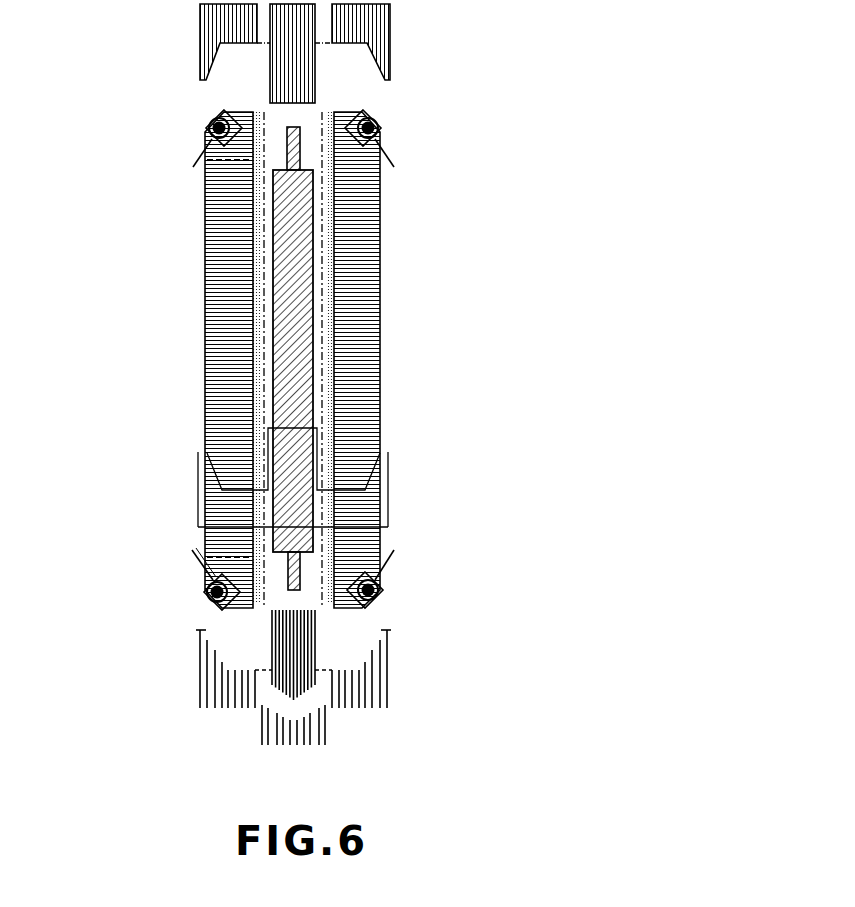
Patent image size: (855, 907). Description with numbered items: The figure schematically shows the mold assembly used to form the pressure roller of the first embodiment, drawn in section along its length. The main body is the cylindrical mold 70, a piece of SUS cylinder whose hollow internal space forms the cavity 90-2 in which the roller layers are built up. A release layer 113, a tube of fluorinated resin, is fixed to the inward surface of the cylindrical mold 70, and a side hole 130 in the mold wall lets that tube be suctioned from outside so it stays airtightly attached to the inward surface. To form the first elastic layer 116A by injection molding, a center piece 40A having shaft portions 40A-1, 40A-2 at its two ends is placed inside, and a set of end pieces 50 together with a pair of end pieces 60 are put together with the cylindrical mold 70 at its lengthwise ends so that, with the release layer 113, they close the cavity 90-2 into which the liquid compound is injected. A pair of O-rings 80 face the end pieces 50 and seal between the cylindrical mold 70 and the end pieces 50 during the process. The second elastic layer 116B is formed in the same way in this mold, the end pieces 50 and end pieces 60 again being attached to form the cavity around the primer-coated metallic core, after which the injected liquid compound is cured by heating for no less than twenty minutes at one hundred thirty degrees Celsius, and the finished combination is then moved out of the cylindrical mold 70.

The end pieces 50 is at (368, 24).
The release layer 113 is at (386, 150).
The cavity 90-2 is at (272, 283).
The shaft portion 40A-2 is at (307, 157).
The center piece 40A is at (340, 262).
The first elastic layer 116A is at (255, 368).
The second elastic layer 116B is at (250, 460).
The cylindrical mold 70 is at (368, 423).
The side hole 130 is at (215, 583).
The shaft portion 40A-1 is at (300, 578).
The O-rings 80 is at (207, 592).
The end pieces 60 is at (378, 688).